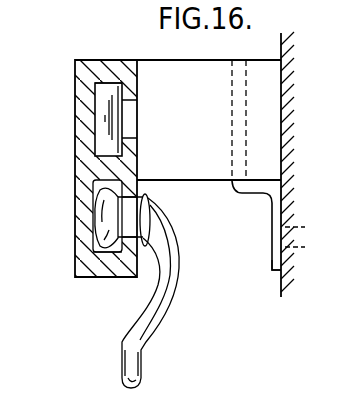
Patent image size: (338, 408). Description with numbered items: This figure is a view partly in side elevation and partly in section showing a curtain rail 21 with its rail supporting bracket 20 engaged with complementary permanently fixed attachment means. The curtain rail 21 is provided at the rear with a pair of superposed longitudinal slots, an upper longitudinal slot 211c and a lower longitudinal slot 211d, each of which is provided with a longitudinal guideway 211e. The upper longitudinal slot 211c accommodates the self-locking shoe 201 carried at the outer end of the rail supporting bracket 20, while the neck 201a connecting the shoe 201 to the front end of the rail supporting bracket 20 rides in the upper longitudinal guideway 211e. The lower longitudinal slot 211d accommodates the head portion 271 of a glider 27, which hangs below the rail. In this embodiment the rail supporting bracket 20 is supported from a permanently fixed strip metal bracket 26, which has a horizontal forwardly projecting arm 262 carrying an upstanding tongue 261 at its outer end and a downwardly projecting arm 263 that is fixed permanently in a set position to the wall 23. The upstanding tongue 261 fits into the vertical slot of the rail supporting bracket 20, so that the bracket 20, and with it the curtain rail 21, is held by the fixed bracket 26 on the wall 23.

The rail supporting bracket 20 is at (202, 131).
The curtain rail 21 is at (76, 200).
The wall 23 is at (285, 103).
The strip metal bracket 26 is at (232, 190).
The glider 27 is at (163, 318).
The shoe 201 is at (100, 130).
The neck 201a is at (136, 108).
The upper longitudinal slot 211c is at (113, 81).
The lower longitudinal slot 211d is at (100, 258).
The longitudinal guideway 211e is at (142, 196).
The upstanding tongue 261 is at (246, 145).
The horizontal forwardly projecting arm 262 is at (253, 196).
The downwardly projecting arm 263 is at (272, 271).
The head portion 271 is at (106, 220).